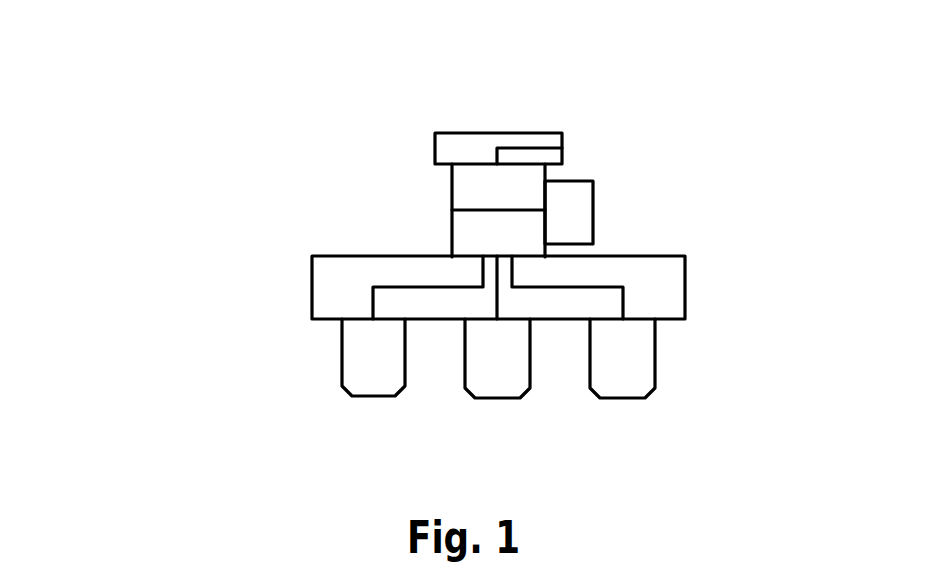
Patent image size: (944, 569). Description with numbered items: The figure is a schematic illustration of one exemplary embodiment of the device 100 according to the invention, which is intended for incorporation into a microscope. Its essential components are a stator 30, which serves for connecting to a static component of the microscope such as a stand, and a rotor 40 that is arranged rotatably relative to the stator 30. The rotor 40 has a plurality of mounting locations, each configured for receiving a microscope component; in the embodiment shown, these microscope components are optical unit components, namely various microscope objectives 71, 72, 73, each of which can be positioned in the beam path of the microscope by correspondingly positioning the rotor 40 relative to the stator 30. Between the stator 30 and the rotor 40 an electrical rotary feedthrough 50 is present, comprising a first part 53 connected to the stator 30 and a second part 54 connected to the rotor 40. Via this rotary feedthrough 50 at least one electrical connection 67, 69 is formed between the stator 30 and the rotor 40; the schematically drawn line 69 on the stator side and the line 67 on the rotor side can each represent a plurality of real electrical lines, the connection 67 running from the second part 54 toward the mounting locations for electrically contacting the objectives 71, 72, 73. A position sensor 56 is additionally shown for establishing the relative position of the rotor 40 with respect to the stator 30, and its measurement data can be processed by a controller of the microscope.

The device 100 is at (253, 80).
The stator 30 is at (470, 145).
The electrical connection 69 is at (568, 150).
The electrical rotary feedthrough 50 is at (348, 227).
The first part of the rotary feedthrough 53 is at (461, 193).
The second part of the rotary feedthrough 54 is at (463, 240).
The position sensor 56 is at (575, 215).
The rotor 40 is at (345, 278).
The electrical connection 67 is at (623, 299).
The microscope objective 71 is at (382, 358).
The microscope objective 72 is at (499, 371).
The microscope objective 73 is at (633, 357).